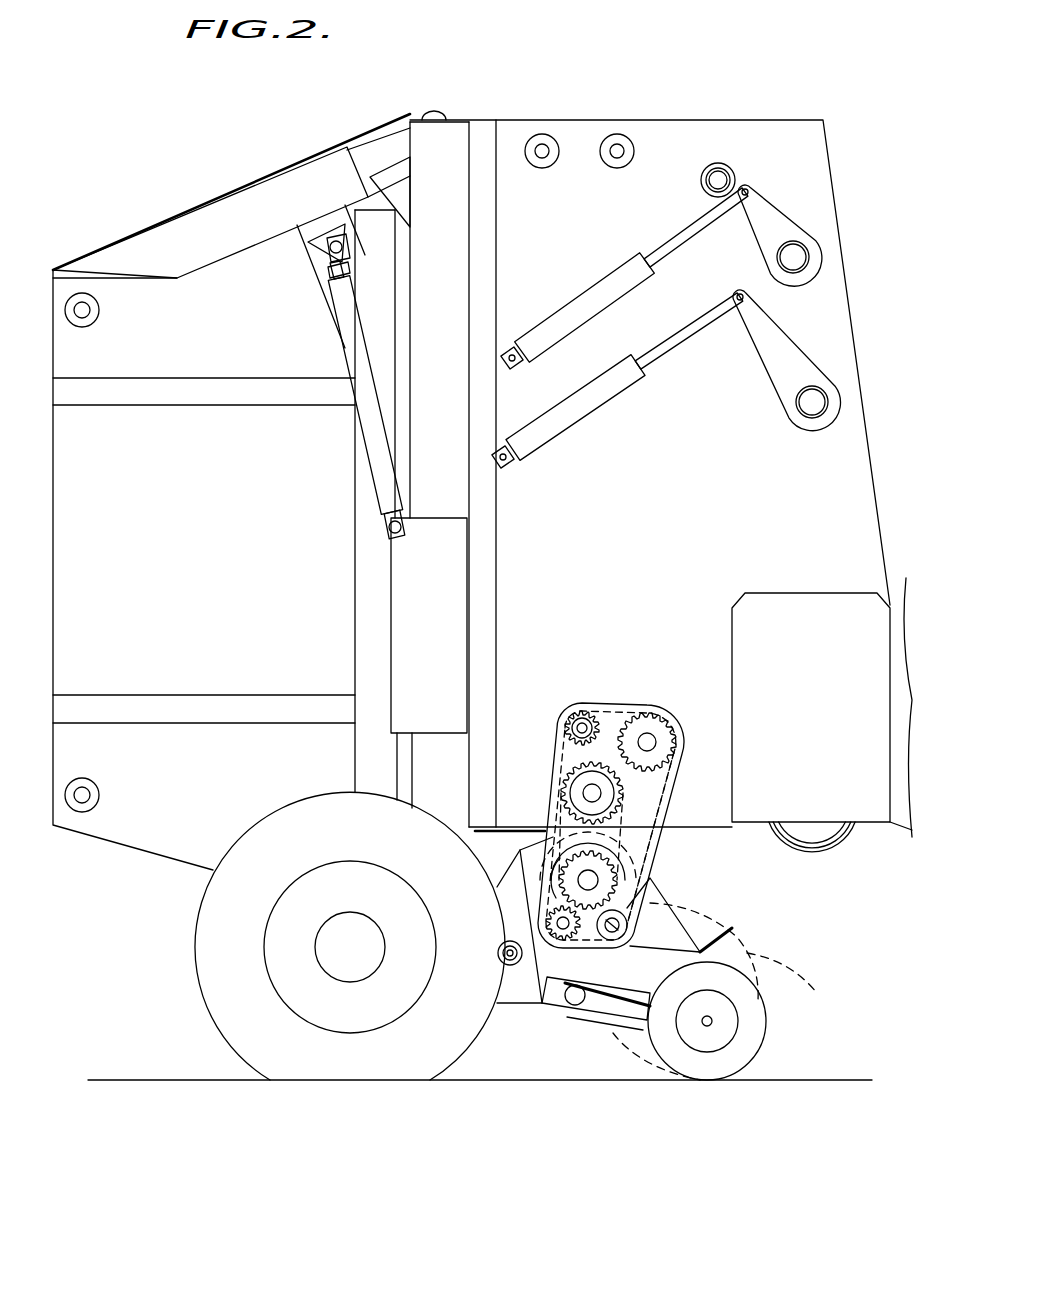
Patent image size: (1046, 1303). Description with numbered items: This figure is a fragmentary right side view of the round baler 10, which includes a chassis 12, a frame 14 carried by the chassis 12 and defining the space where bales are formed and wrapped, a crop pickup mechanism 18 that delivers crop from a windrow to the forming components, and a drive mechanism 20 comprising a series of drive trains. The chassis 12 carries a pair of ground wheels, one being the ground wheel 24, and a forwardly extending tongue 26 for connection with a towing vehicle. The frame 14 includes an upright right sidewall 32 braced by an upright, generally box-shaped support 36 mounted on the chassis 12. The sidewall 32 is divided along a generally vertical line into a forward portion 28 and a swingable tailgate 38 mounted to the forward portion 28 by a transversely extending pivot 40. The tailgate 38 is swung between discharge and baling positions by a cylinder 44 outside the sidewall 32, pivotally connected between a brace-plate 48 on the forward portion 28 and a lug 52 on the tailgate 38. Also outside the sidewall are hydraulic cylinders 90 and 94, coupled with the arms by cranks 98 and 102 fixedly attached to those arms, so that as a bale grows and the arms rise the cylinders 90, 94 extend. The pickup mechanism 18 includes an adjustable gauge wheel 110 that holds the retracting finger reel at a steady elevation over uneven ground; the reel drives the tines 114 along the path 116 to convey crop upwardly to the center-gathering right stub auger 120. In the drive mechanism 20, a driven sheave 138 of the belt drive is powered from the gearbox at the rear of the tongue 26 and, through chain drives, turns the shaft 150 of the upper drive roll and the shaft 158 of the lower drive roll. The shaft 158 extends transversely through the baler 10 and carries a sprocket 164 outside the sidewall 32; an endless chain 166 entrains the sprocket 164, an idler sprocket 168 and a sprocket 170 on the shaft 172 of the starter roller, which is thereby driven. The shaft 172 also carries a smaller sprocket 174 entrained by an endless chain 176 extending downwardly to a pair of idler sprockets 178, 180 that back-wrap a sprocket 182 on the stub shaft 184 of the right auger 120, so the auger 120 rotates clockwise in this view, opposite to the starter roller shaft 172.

The round baler 10 is at (250, 140).
The chassis 12 is at (505, 1015).
The frame 14 is at (122, 868).
The crop pickup mechanism 18 is at (748, 902).
The drive mechanism 20 is at (560, 702).
The ground wheel 24 is at (234, 1027).
The tongue 26 is at (905, 632).
The forward portion 28 is at (672, 122).
The right sidewall 32 is at (650, 475).
The support 36 is at (482, 492).
The tailgate 38 is at (133, 300).
The pivot 40 is at (440, 117).
The cylinder 44 is at (366, 442).
The brace-plate 48 is at (452, 600).
The lug 52 is at (326, 254).
The hydraulic cylinder 90 is at (604, 293).
The hydraulic cylinder 94 is at (600, 406).
The crank 98 is at (782, 220).
The crank 102 is at (772, 354).
The gauge wheel 110 is at (752, 1046).
The tines 114 is at (772, 944).
The path 116 is at (729, 991).
The right stub auger 120 is at (636, 848).
The driven sheave 138 is at (838, 838).
The shaft 150 is at (700, 186).
The drive roll shaft 158 is at (655, 742).
The sprocket 164 is at (661, 727).
The endless chain 166 is at (626, 712).
The idler sprocket 168 is at (600, 712).
The sprocket 170 is at (652, 776).
The shaft 172 is at (584, 793).
The sprocket 174 is at (606, 802).
The endless chain 176 is at (545, 902).
The idler sprocket 178 is at (564, 941).
The idler sprocket 180 is at (614, 940).
The sprocket 182 is at (600, 890).
The stub shaft 184 is at (596, 880).